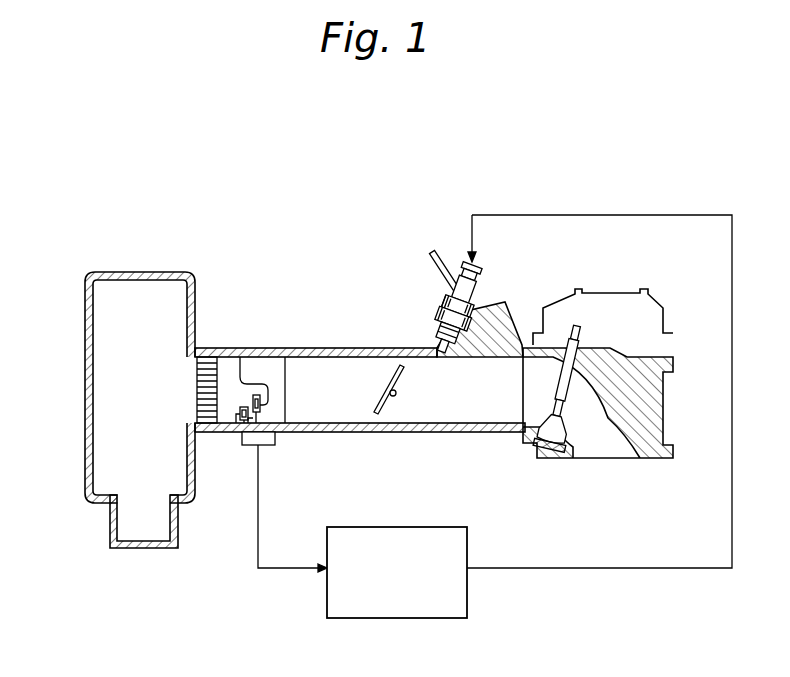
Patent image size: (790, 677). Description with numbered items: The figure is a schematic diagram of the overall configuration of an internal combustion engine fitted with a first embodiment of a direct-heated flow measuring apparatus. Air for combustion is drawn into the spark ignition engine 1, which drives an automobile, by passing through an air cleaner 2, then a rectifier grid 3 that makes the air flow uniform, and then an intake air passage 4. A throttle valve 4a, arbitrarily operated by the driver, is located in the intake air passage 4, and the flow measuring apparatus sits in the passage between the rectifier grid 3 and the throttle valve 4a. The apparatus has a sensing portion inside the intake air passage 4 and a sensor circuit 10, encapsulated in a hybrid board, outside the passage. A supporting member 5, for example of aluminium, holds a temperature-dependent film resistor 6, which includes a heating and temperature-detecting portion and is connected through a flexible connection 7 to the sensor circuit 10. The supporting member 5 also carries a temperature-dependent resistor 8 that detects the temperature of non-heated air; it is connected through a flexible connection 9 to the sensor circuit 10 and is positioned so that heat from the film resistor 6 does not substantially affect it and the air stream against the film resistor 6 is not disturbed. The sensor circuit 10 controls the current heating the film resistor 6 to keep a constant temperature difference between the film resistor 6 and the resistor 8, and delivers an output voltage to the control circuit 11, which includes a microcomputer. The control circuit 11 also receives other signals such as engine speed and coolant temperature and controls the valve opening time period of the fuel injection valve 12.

The spark ignition engine 1 is at (650, 406).
The air cleaner 2 is at (134, 293).
The rectifier grid 3 is at (228, 368).
The intake air passage 4 is at (357, 413).
The throttle valve 4a is at (400, 391).
The supporting member 5 is at (296, 376).
The temperature-dependent resistor (film resistor) 6 is at (254, 394).
The flexible connection 7 is at (262, 417).
The temperature-dependent resistor 8 is at (238, 414).
The flexible connection 9 is at (244, 422).
The sensor circuit 10 is at (280, 448).
The control circuit 11 is at (442, 527).
The fuel injection valve 12 is at (473, 282).